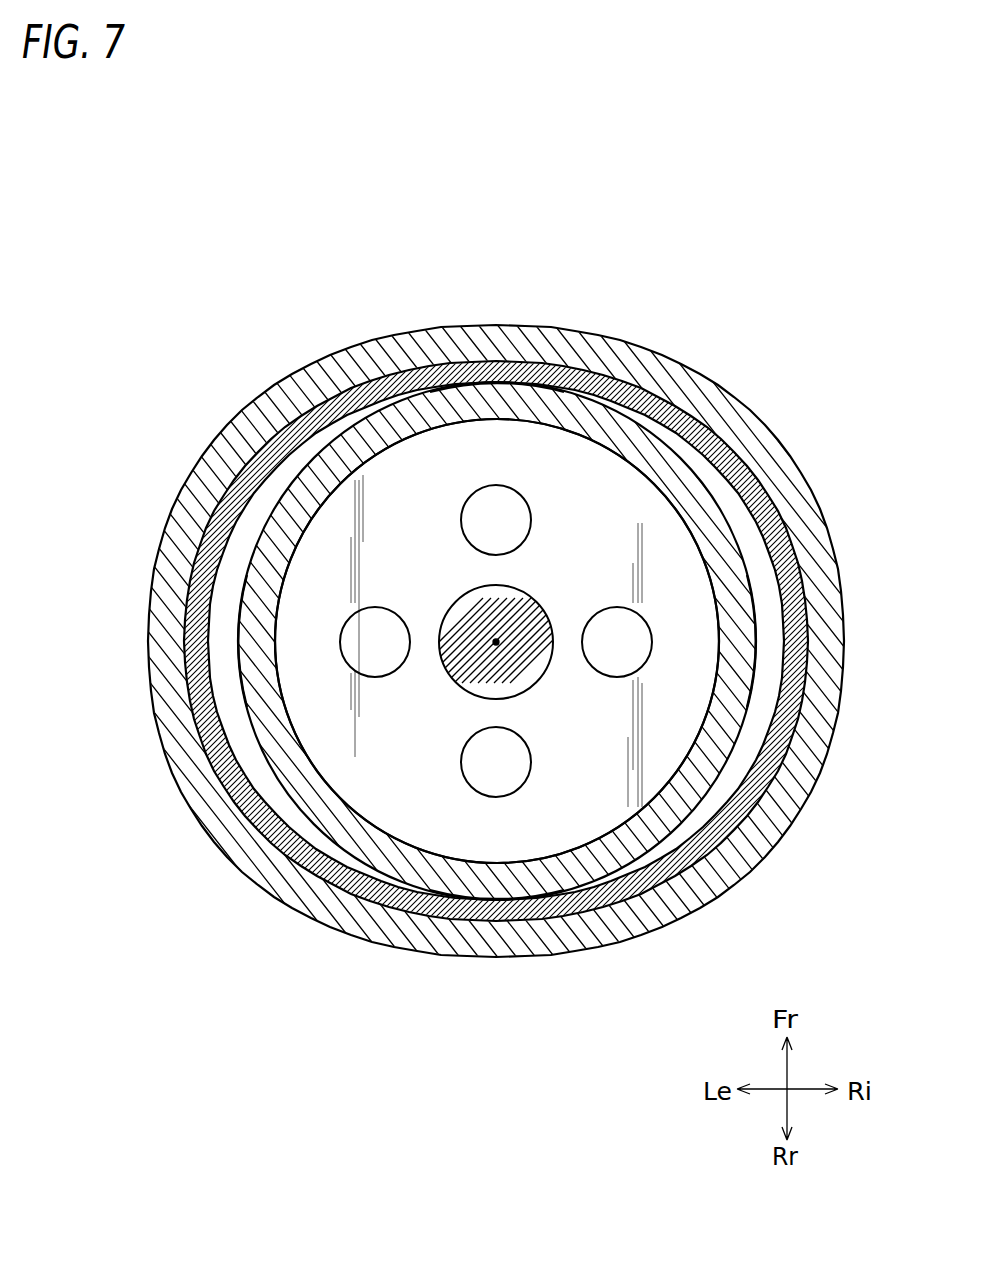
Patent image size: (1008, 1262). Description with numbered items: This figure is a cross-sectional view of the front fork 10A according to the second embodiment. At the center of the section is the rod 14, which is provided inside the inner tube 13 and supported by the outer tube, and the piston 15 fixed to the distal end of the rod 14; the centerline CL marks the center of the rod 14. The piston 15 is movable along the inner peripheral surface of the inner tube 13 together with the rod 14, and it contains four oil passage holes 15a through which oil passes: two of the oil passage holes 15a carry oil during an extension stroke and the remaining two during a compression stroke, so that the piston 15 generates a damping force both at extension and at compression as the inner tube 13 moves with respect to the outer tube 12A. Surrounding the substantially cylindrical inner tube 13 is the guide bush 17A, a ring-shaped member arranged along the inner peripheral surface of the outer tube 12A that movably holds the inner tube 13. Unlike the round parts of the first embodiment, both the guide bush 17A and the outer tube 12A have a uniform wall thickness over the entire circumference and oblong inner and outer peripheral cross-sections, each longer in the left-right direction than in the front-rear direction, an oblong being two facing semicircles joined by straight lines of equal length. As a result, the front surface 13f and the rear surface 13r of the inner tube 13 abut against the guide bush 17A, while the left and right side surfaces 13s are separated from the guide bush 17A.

The front fork 10A is at (231, 215).
The outer tube 12A is at (525, 338).
The guide bush 17A is at (680, 410).
The inner tube 13 is at (677, 803).
The front surface 13f is at (487, 383).
The rear surface 13r is at (492, 898).
The side surfaces 13s is at (237, 641).
The rod 14 is at (448, 670).
The piston 15 is at (432, 826).
The oil passage holes 15a is at (499, 486).
The center line CL is at (496, 642).